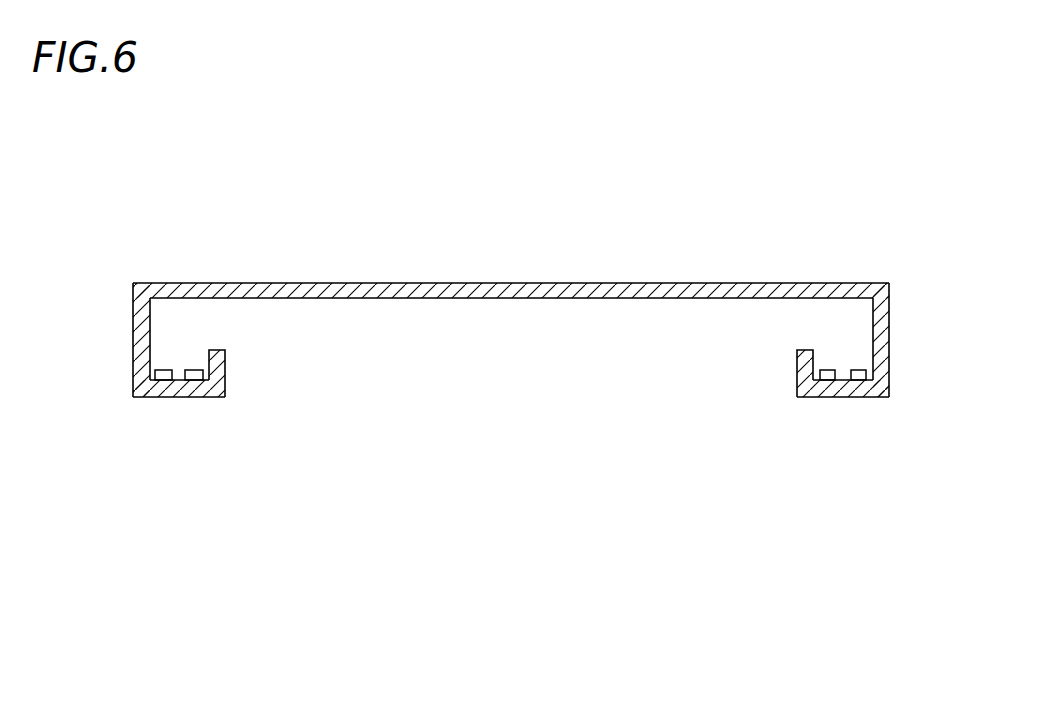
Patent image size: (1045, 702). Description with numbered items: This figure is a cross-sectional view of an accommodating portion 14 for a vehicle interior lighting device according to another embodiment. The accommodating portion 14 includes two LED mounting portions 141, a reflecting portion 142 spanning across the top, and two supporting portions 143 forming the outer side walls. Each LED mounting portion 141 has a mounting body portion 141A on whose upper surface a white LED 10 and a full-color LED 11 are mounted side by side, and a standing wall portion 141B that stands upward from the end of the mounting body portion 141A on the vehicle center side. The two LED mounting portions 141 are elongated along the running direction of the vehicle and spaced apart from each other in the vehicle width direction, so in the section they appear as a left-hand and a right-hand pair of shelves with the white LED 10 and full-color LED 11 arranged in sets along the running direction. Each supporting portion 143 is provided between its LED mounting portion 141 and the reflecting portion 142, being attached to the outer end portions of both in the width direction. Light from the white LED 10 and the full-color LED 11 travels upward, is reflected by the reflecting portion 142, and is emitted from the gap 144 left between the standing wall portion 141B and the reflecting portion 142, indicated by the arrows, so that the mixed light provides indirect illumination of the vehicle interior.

The accommodating portion 14 is at (501, 443).
The LED mounting portion 141 is at (511, 491).
The mounting body portion 141A is at (188, 381).
The standing wall portion 141B is at (222, 368).
The reflecting portion 142 is at (380, 287).
The supporting portion 143 is at (138, 328).
The gap 144 is at (218, 322).
The white LED 10 is at (165, 381).
The full-color LED 11 is at (196, 381).